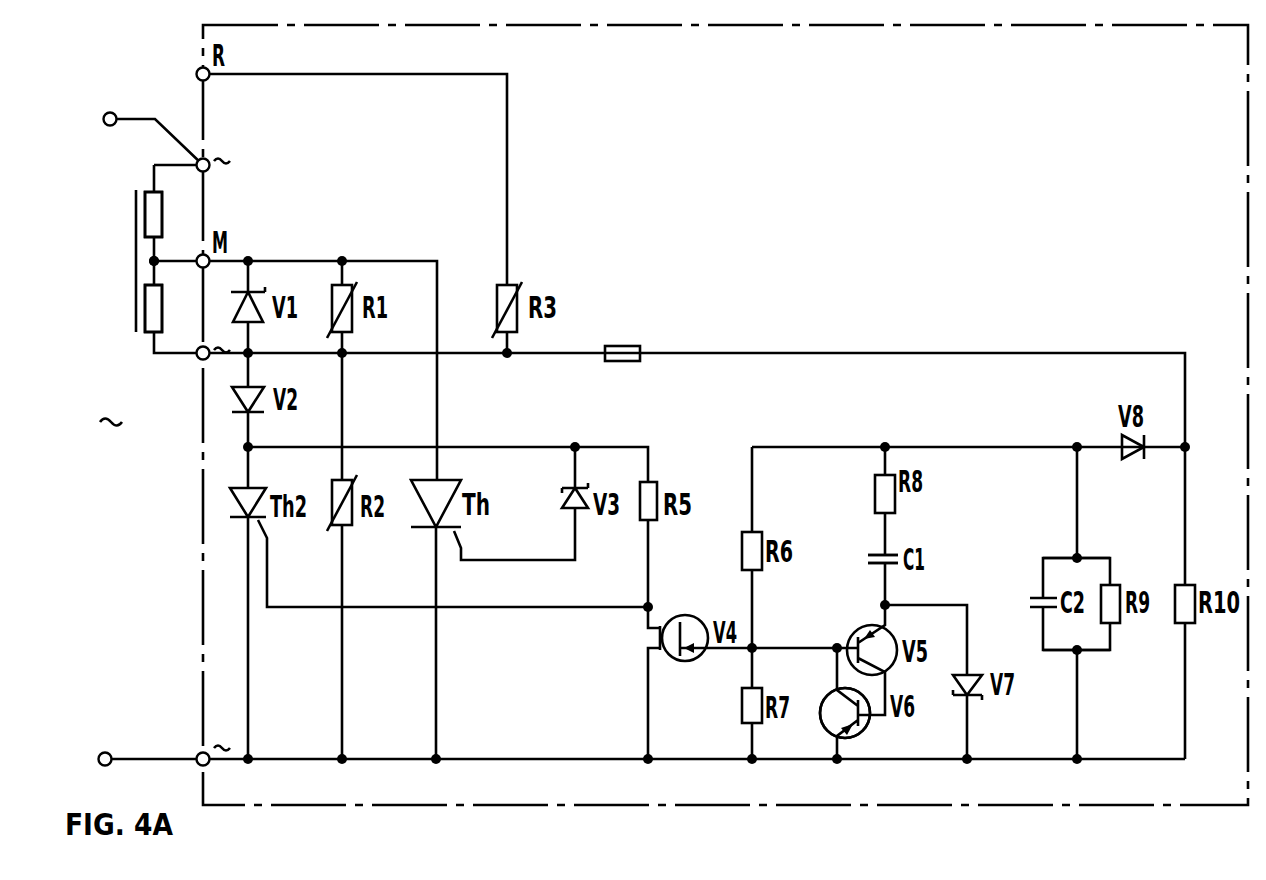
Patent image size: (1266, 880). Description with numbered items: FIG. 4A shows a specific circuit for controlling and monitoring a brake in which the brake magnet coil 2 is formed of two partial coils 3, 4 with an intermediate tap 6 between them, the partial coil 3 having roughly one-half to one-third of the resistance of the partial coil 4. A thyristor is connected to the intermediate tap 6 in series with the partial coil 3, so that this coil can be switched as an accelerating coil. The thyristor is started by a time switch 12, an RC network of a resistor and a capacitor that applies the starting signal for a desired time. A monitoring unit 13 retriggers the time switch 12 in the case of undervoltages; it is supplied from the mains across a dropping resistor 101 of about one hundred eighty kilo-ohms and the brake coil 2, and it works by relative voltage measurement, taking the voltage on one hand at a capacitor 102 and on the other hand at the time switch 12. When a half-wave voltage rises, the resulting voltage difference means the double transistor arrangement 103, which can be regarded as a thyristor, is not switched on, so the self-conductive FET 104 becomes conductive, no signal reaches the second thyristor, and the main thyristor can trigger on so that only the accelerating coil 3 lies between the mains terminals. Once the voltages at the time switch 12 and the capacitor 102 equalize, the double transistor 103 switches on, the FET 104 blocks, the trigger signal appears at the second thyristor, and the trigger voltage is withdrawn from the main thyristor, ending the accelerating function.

The brake magnet coil 2 is at (126, 252).
The partial coil 3 is at (157, 207).
The partial coil 4 is at (157, 315).
The intermediate tap 6 is at (157, 258).
The time switch 12 is at (897, 537).
The monitoring unit 13 is at (1094, 547).
The dropping resistor 101 is at (672, 320).
The capacitor 102 is at (1021, 601).
The double transistor arrangement 103 is at (880, 725).
The FET 104 is at (650, 638).